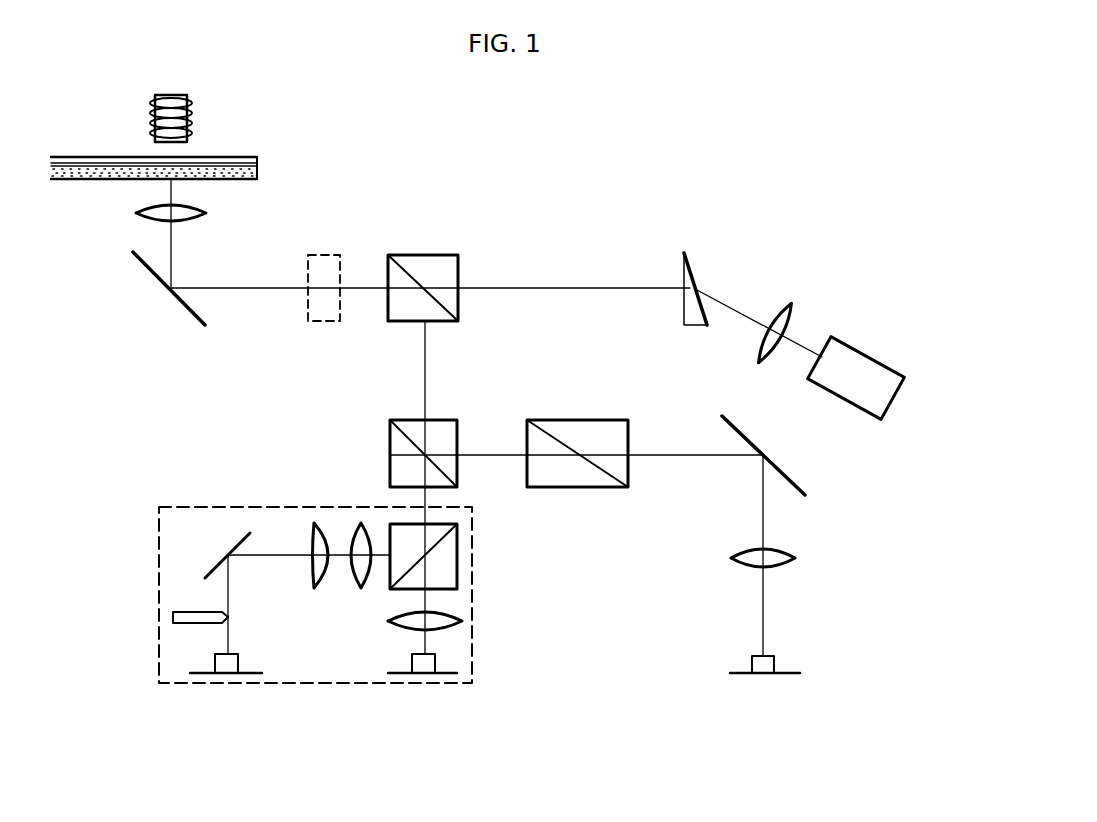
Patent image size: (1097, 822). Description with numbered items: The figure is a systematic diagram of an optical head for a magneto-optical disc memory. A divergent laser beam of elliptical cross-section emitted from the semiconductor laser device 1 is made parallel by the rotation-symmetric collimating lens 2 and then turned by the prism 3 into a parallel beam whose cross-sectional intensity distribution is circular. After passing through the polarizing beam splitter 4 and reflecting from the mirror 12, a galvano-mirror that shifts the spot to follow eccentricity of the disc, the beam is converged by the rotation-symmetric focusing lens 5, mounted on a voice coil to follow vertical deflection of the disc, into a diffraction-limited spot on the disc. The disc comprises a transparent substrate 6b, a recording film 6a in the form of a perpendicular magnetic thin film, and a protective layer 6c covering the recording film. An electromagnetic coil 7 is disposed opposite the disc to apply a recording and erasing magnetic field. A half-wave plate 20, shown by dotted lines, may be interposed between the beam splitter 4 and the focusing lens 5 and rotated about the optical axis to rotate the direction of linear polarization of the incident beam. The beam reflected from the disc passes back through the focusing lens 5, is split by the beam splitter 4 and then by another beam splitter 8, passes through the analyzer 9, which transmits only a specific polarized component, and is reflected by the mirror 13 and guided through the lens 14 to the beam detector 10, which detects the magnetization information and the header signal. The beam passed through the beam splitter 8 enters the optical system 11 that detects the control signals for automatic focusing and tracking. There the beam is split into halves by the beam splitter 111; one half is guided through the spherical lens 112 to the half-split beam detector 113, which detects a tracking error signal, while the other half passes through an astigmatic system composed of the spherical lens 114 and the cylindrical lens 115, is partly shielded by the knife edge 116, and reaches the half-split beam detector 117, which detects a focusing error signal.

The semiconductor laser device 1 is at (870, 355).
The collimating lens 2 is at (784, 305).
The prism 3 is at (688, 262).
The beam splitter 4 is at (417, 255).
The focusing lens 5 is at (206, 211).
The recording film 6a is at (258, 168).
The transparent substrate 6b is at (243, 180).
The protective layer 6c is at (228, 158).
The electromagnetic coil 7 is at (188, 113).
The beam splitter 8 is at (390, 447).
The analyzer 9 is at (573, 487).
The beam detector 10 is at (776, 664).
The optical system 11 is at (473, 553).
The mirror 12 is at (193, 314).
The mirror 13 is at (780, 467).
The lens 14 is at (795, 553).
The λ/2 plate 20 is at (324, 321).
The beam splitter 111 is at (457, 588).
The spherical lens 112 is at (462, 627).
The half-split beam detector 113 is at (437, 662).
The spherical lens 114 is at (361, 590).
The cylindrical lens 115 is at (313, 591).
The knife edge 116 is at (182, 612).
The half-split beam detector 117 is at (240, 662).